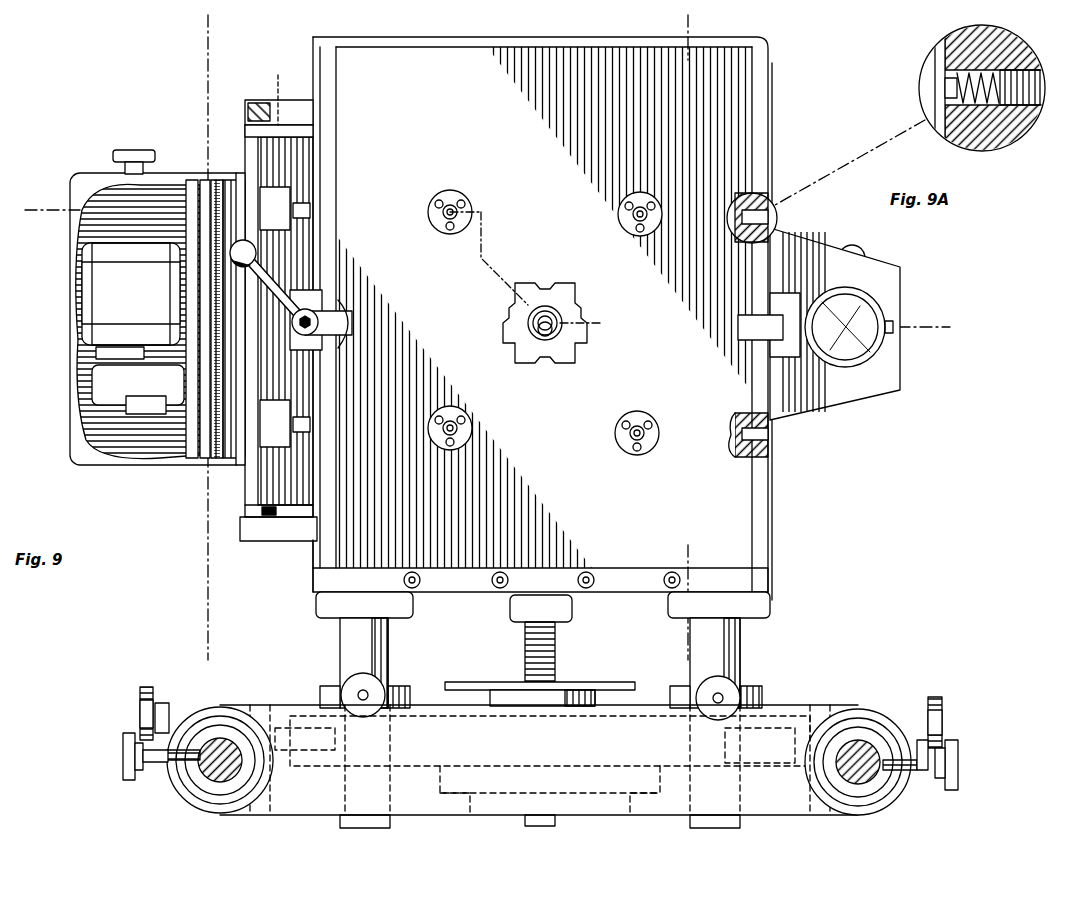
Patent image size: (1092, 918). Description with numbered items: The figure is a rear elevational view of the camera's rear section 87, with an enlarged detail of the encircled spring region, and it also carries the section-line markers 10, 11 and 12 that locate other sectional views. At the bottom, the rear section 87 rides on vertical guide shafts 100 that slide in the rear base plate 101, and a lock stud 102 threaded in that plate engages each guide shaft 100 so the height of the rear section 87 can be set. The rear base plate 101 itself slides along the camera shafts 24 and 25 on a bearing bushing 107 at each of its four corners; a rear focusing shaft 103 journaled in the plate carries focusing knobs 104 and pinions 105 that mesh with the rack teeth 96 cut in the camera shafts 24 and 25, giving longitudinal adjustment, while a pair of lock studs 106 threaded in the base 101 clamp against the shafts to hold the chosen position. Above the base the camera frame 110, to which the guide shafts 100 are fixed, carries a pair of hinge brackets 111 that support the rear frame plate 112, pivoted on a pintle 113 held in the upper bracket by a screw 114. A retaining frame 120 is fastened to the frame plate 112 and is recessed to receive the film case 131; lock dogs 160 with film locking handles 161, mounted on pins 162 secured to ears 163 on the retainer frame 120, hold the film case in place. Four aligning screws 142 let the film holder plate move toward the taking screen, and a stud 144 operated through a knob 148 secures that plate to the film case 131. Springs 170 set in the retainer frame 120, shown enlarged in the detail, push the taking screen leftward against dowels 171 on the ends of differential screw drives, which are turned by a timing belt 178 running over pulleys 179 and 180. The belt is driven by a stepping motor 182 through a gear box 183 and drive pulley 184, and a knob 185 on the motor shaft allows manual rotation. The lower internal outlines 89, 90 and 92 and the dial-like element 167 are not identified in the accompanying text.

In FIG. 9, the section line 10- 10 is at (222, 25).
In FIG. 9, the section line 11- 11 is at (705, 22).
In FIG. 9, the section line 12- 12 is at (42, 226).
In FIG. 9, the camera shaft 24 is at (860, 778).
In FIG. 9, the camera shaft 25 is at (215, 775).
In FIG. 9, the rear section 87 is at (840, 525).
In FIG. 9, the adjusting screw 89 is at (556, 656).
In FIG. 9, the base housing 90 is at (592, 775).
In FIG. 9, the plate 92 is at (618, 682).
In FIG. 9, the rack teeth 96 is at (248, 783).
In FIG. 9, the vertical guide shaft 100 is at (388, 650).
In FIG. 9, the rear base plate 101 is at (775, 704).
In FIG. 9, the lock stud 102 is at (380, 682).
In FIG. 9, the rear focusing shaft 103 is at (170, 705).
In FIG. 9, the focusing knob 104 is at (146, 690).
In FIG. 9, the pinion 105 is at (235, 708).
In FIG. 9, the lock stud 106 is at (122, 772).
In FIG. 9, the bearing bushing 107 is at (265, 770).
In FIG. 9, the camera frame 110 is at (328, 88).
In FIG. 9, the hinge bracket 111 is at (320, 116).
In FIG. 9, the rear frame plate 112 is at (255, 160).
In FIG. 9, the pintle 113 is at (282, 91).
In FIG. 9, the screw 114 is at (245, 108).
In FIG. 9, the retaining frame 120 is at (768, 452).
In FIG. 9A, the retaining frame 120 is at (1002, 128).
In FIG. 9, the film case 131 is at (544, 307).
In FIG. 9, the aligning screw 142 is at (440, 230).
In FIG. 9, the stud 144 is at (551, 338).
In FIG. 9, the knob 148 is at (585, 318).
In FIG. 9, the lock dog 160 is at (322, 318).
In FIG. 9, the film locking handle 161 is at (853, 245).
In FIG. 9, the pin 162 is at (315, 322).
In FIG. 9, the ear 163 is at (546, 321).
In FIG. 9, the dial indicator 167 is at (849, 327).
In FIG. 9, the spring 170 is at (768, 213).
In FIG. 9A, the spring 170 is at (946, 88).
In FIG. 9, the dowel 171 is at (310, 214).
In FIG. 9, the timing belt 178 is at (190, 450).
In FIG. 9, the pulley 179 is at (222, 460).
In FIG. 9, the pulley 180 is at (240, 182).
In FIG. 9, the stepping motor 182 is at (131, 294).
In FIG. 9, the gear box 183 is at (138, 389).
In FIG. 9, the drive pulley 184 is at (165, 370).
In FIG. 9, the knob 185 is at (145, 143).